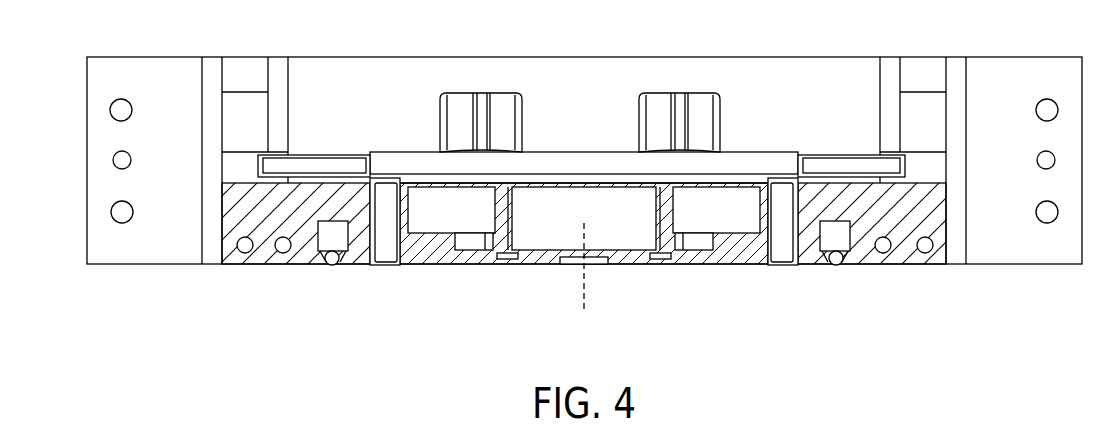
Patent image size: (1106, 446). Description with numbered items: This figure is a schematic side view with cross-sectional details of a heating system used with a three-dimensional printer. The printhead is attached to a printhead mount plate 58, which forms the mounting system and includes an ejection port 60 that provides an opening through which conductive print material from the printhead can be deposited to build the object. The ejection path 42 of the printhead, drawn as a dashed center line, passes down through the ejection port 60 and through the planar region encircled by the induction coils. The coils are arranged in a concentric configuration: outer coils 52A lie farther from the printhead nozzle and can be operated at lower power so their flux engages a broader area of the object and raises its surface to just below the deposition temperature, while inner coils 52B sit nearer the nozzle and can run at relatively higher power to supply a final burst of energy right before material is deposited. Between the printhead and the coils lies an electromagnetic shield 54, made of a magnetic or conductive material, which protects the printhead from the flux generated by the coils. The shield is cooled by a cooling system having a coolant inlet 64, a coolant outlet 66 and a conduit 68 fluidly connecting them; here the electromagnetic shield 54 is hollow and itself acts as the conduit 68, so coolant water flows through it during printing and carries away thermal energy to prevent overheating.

The ejection path 42 is at (586, 286).
The outer coils 52A is at (283, 253).
The inner coils 52B is at (330, 266).
The electromagnetic shield 54 is at (560, 152).
The printhead mount plate 58 is at (103, 185).
The ejection port 60 is at (578, 270).
The coolant inlet 64 is at (475, 97).
The coolant outlet 66 is at (677, 97).
The conduit 68 is at (313, 163).